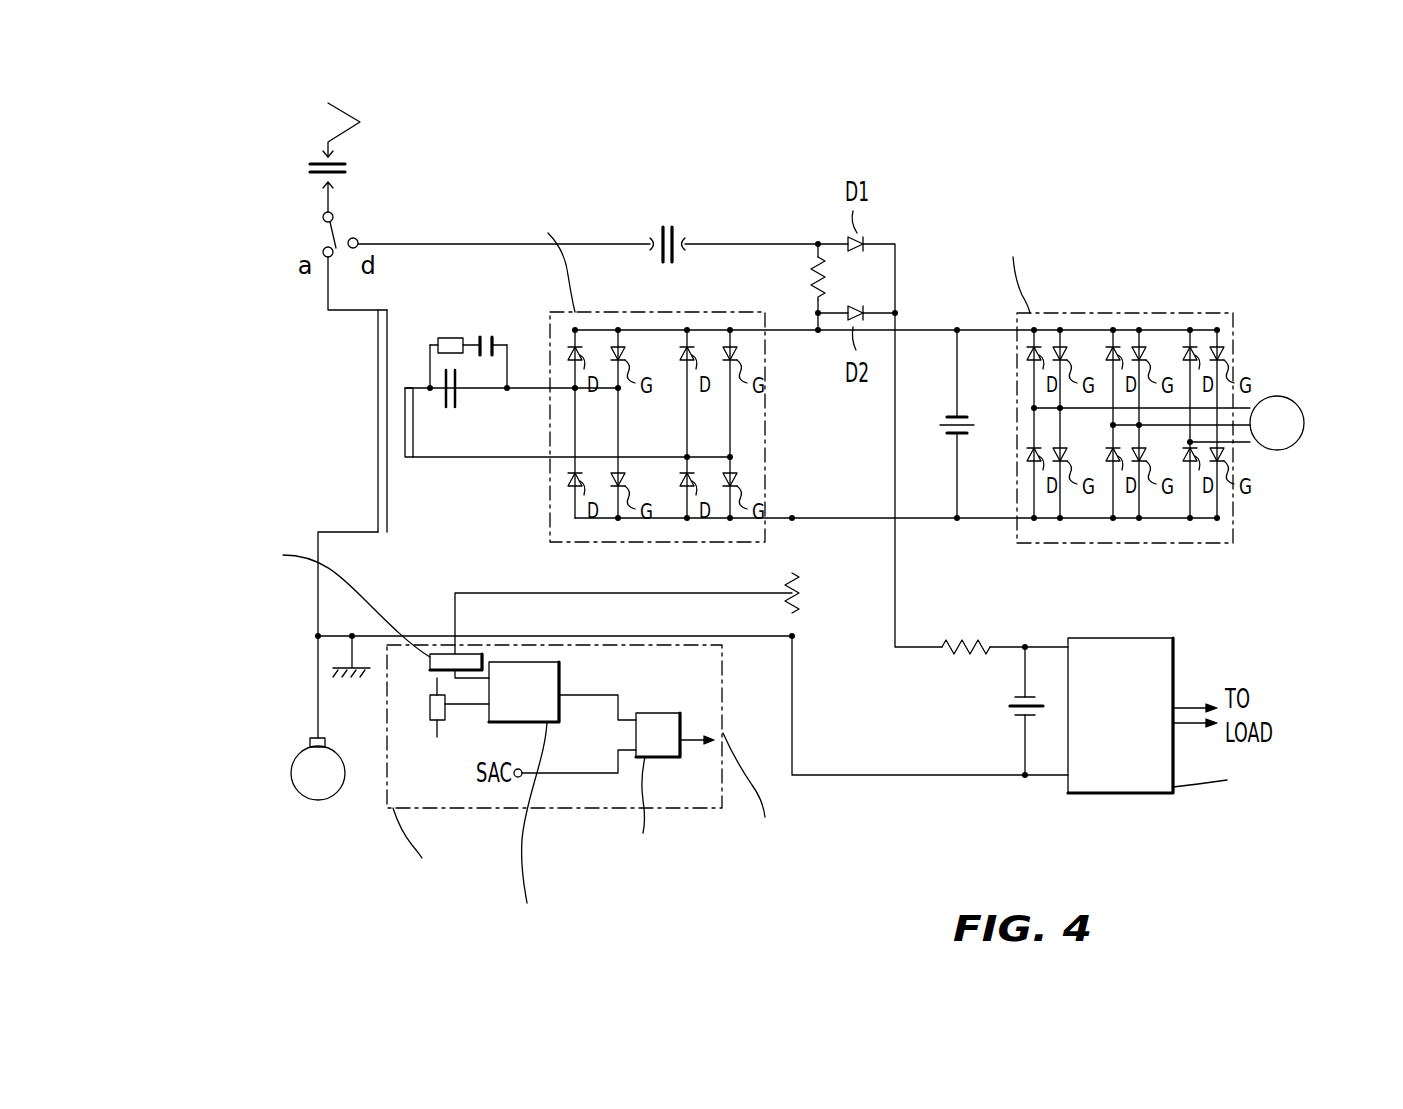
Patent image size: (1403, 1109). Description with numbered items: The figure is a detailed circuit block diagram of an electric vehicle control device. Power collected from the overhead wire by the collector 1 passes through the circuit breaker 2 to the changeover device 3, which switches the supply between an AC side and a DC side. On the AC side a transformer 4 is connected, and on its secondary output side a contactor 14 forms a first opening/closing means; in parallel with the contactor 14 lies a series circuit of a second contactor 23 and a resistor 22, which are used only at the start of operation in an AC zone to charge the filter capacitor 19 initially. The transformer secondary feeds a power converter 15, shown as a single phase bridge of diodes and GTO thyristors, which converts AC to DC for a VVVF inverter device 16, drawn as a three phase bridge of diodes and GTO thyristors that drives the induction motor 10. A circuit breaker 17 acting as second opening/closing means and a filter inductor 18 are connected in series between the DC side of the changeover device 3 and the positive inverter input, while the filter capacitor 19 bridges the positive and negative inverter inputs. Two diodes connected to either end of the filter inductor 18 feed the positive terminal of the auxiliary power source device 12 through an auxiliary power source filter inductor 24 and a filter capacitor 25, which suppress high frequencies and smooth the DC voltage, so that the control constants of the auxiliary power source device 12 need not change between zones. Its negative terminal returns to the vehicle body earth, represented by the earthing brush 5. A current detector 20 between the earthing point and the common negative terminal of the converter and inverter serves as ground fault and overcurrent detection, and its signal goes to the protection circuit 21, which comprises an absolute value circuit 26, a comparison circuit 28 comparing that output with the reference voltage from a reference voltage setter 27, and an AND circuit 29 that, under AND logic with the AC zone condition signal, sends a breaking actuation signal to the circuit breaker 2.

The collector 1 is at (360, 122).
The circuit breaker 2 is at (345, 168).
The changeover device 3 is at (340, 230).
The transformer 4 is at (387, 513).
The earthing brush 5 is at (318, 800).
The motor 10 is at (1303, 440).
The auxiliary power source device 12 is at (1123, 638).
The contactor 14 is at (450, 407).
The power converter 15 is at (673, 543).
The VVVF inverter device 16 is at (1138, 313).
The circuit breaker 17 is at (667, 222).
The filter inductor 18 is at (810, 278).
The filter capacitor 19 is at (967, 433).
The current detector 20 is at (802, 590).
The protection circuit 21 is at (722, 675).
The resistor 22 is at (450, 338).
The second contactor 23 is at (487, 337).
The auxiliary power source filter inductor 24 is at (967, 640).
The filter capacitor 25 is at (1008, 710).
The absolute value circuit 26 is at (430, 664).
The reference voltage setter 27 is at (428, 705).
The comparison circuit 28 is at (559, 682).
The AND circuit 29 is at (653, 713).